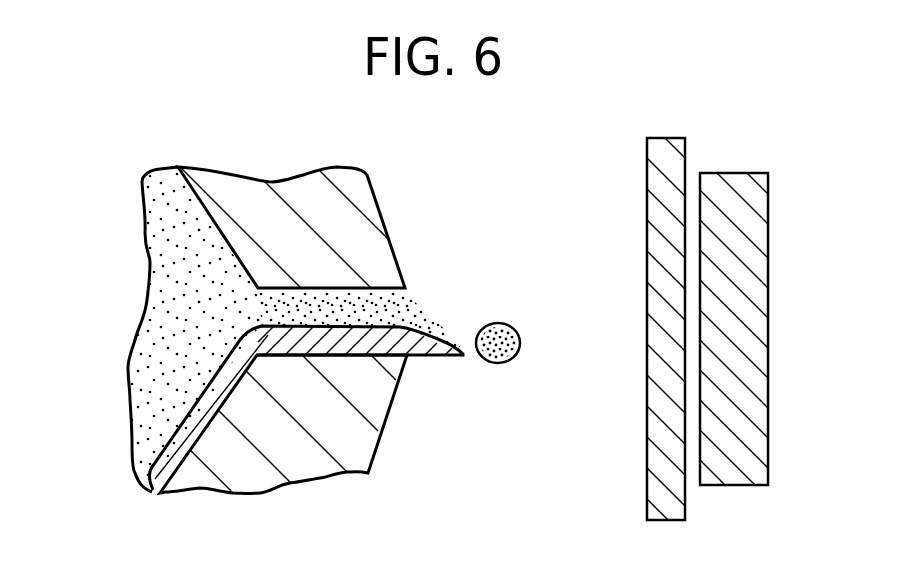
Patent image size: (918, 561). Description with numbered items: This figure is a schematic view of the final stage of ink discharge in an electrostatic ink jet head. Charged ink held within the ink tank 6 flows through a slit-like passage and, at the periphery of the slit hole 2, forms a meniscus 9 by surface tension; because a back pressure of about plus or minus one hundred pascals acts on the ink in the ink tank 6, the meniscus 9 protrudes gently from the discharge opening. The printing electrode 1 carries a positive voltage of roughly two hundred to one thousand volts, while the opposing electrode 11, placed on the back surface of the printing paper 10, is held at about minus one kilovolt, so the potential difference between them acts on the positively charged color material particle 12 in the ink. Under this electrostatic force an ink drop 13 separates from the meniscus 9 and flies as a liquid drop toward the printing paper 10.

The printing electrode 1 is at (438, 357).
The slit hole 2 is at (330, 305).
The ink tank 6 is at (143, 342).
The meniscus 9 is at (446, 324).
The printing paper 10 is at (647, 197).
The opposing electrode 11 is at (770, 197).
The color material particle 12 is at (156, 262).
The ink drop 13 is at (513, 330).